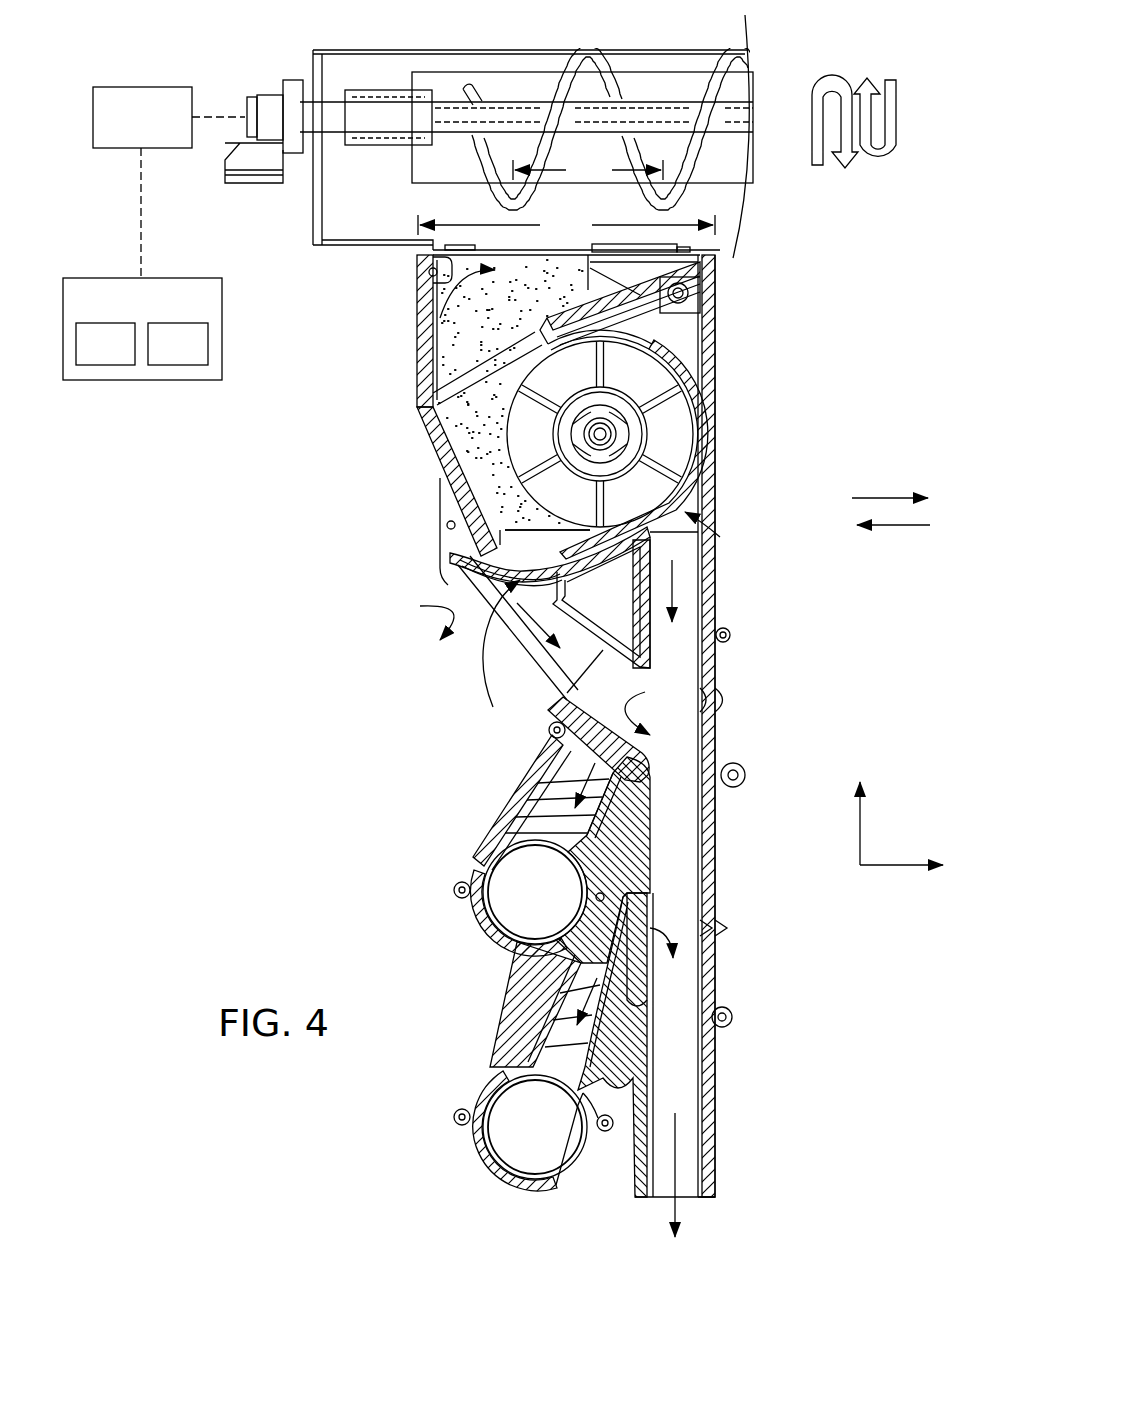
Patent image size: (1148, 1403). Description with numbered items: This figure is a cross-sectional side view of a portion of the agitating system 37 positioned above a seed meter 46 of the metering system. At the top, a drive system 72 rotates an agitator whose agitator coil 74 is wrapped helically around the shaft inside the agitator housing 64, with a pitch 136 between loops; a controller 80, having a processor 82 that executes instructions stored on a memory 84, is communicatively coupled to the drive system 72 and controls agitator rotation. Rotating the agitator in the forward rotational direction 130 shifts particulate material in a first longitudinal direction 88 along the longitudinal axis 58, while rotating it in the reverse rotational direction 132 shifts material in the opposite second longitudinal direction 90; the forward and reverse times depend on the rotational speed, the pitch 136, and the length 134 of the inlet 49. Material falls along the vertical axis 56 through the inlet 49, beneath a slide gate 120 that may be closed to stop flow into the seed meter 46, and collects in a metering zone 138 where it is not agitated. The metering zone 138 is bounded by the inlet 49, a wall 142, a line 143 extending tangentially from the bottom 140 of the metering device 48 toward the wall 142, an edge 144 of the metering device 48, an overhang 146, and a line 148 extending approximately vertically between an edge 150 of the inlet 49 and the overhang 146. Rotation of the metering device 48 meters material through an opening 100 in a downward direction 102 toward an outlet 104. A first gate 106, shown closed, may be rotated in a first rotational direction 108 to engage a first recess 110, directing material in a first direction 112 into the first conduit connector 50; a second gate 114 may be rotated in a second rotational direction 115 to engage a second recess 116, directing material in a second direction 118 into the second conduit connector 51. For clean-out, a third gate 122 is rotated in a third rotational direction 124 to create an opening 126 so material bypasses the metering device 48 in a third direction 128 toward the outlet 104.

The agitating system 37 is at (850, 303).
The seed meter 46 is at (346, 410).
The metering device 48 is at (640, 382).
The inlet 49 is at (433, 313).
The first conduit connector 50 is at (500, 852).
The second conduit connector 51 is at (553, 1140).
The vertical axis 56 is at (862, 842).
The longitudinal axis 58 is at (886, 866).
The auger housing 64 is at (335, 58).
The drive system 72 is at (118, 87).
The agitator coil 74 is at (708, 148).
The controller 80 is at (180, 278).
The processor 82 is at (105, 365).
The memory 84 is at (178, 365).
The first longitudinal direction 88 is at (898, 526).
The second longitudinal direction 90 is at (887, 497).
The opening 100 is at (720, 537).
The downward direction 102 is at (672, 598).
The outlet 104 is at (693, 1192).
The first gate 106 is at (600, 740).
The first rotational direction 108 is at (655, 706).
The first recess 110 is at (716, 698).
The first direction 112 is at (610, 783).
The second gate 114 is at (645, 975).
The second rotational direction 115 is at (669, 917).
The second recess 116 is at (716, 912).
The second direction 118 is at (572, 1000).
The slide gate 120 is at (345, 262).
The third gate 122 is at (460, 548).
The third rotational direction 124 is at (417, 616).
The opening 126 is at (492, 612).
The third direction 128 is at (553, 669).
The forward rotational direction 130 is at (818, 165).
The reverse rotational direction 132 is at (893, 80).
The length 134 is at (566, 225).
The pitch 136 is at (588, 170).
The metering zone 138 is at (455, 432).
The bottom 140 is at (678, 492).
The wall 142 is at (432, 380).
The line 143 is at (478, 496).
The edge 144 is at (608, 436).
The overhang 146 is at (703, 318).
The line 148 is at (700, 295).
The edge 150 is at (718, 272).